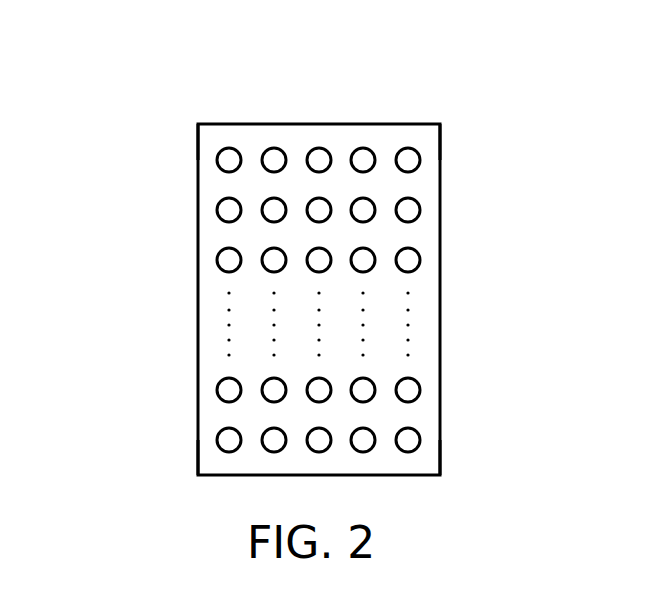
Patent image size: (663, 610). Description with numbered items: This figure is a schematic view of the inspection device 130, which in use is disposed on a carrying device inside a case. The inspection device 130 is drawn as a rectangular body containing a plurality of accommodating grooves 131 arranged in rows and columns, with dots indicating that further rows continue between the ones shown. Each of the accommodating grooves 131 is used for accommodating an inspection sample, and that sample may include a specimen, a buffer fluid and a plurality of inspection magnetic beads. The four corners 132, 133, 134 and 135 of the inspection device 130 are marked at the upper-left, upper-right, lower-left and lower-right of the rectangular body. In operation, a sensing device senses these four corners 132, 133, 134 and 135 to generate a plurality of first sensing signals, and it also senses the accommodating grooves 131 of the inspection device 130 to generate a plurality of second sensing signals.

The inspection device 130 is at (345, 58).
The accommodating grooves 131 is at (413, 160).
The corner 132 is at (196, 122).
The corner 133 is at (442, 122).
The corner 134 is at (196, 477).
The corner 135 is at (442, 477).